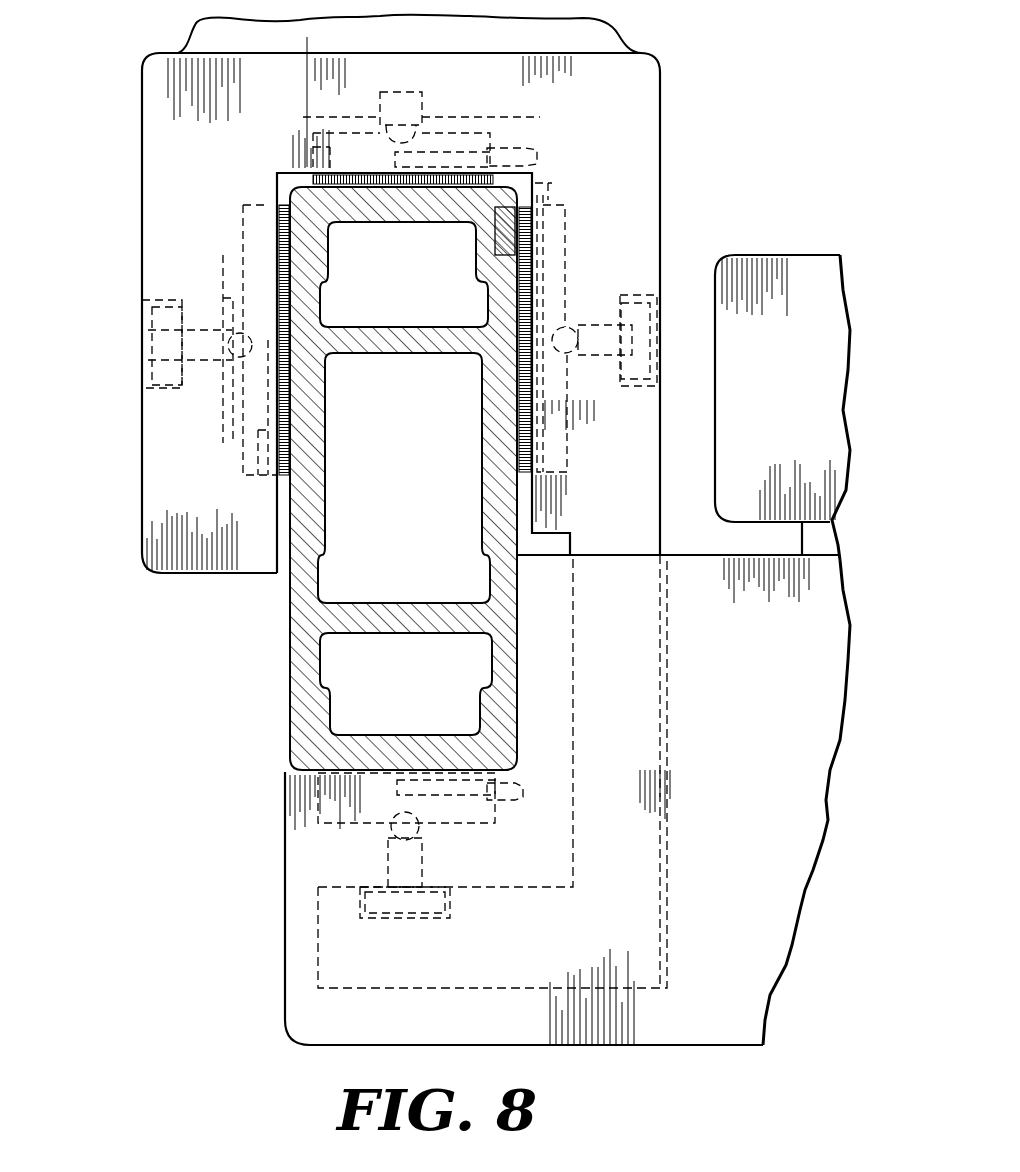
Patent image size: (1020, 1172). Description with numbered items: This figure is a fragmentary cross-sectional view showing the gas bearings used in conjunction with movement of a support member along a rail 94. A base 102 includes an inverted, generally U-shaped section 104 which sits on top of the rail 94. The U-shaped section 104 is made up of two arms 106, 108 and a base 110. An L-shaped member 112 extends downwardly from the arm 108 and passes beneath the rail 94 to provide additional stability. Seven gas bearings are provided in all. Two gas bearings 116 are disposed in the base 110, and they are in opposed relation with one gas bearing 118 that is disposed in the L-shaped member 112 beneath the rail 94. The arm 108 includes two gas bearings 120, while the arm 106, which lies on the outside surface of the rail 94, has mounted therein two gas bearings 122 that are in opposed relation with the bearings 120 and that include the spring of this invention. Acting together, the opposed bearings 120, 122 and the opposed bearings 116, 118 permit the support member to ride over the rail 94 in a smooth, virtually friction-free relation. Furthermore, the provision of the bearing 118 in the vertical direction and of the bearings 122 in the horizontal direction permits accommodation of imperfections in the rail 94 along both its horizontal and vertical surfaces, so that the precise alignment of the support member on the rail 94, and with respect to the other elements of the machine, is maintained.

The rail 94 is at (302, 657).
The base 102 is at (661, 82).
The U-shaped section 104 is at (150, 180).
The arm 106 is at (188, 506).
The arm 108 is at (640, 522).
The base 110 is at (478, 93).
The L-shaped member 112 is at (578, 24).
The gas bearings 116 is at (318, 148).
The gas bearing 118 is at (322, 853).
The gas bearings 120 is at (568, 244).
The gas bearings 122 is at (243, 220).